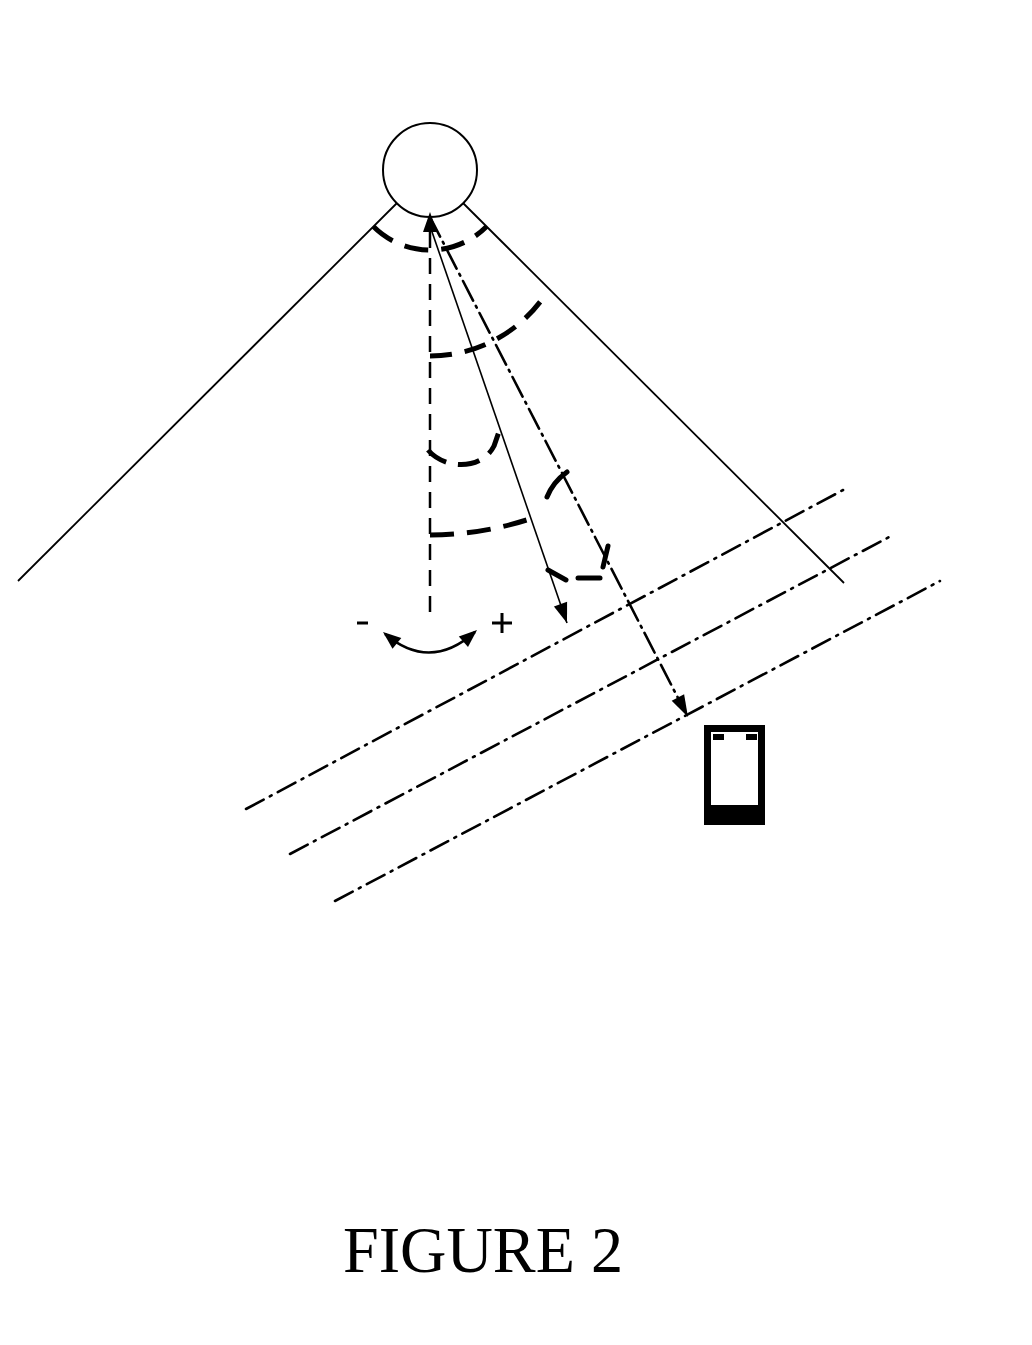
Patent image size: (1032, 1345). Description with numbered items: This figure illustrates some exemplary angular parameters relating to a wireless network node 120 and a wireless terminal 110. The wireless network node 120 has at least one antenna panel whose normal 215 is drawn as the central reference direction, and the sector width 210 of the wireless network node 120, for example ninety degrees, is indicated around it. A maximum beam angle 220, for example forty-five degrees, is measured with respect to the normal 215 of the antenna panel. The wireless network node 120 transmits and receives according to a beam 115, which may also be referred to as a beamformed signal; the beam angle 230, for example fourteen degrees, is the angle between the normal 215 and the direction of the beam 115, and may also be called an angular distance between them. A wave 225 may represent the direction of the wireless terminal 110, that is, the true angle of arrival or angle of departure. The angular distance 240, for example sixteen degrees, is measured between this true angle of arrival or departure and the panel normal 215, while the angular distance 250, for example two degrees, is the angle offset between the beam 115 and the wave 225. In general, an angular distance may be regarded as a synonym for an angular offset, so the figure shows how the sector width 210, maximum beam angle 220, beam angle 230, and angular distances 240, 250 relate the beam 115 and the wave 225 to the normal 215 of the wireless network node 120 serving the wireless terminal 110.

The wireless network node 120 is at (452, 128).
The sector width 210 is at (463, 245).
The maximum beam angle 220 is at (515, 333).
The beam 115 is at (457, 293).
The normal 215 is at (428, 380).
The beam angle 230 is at (453, 463).
The angular distance 240 is at (553, 497).
The angular distance 250 is at (600, 580).
The wave 225 is at (680, 696).
The wireless terminal 110 is at (705, 826).